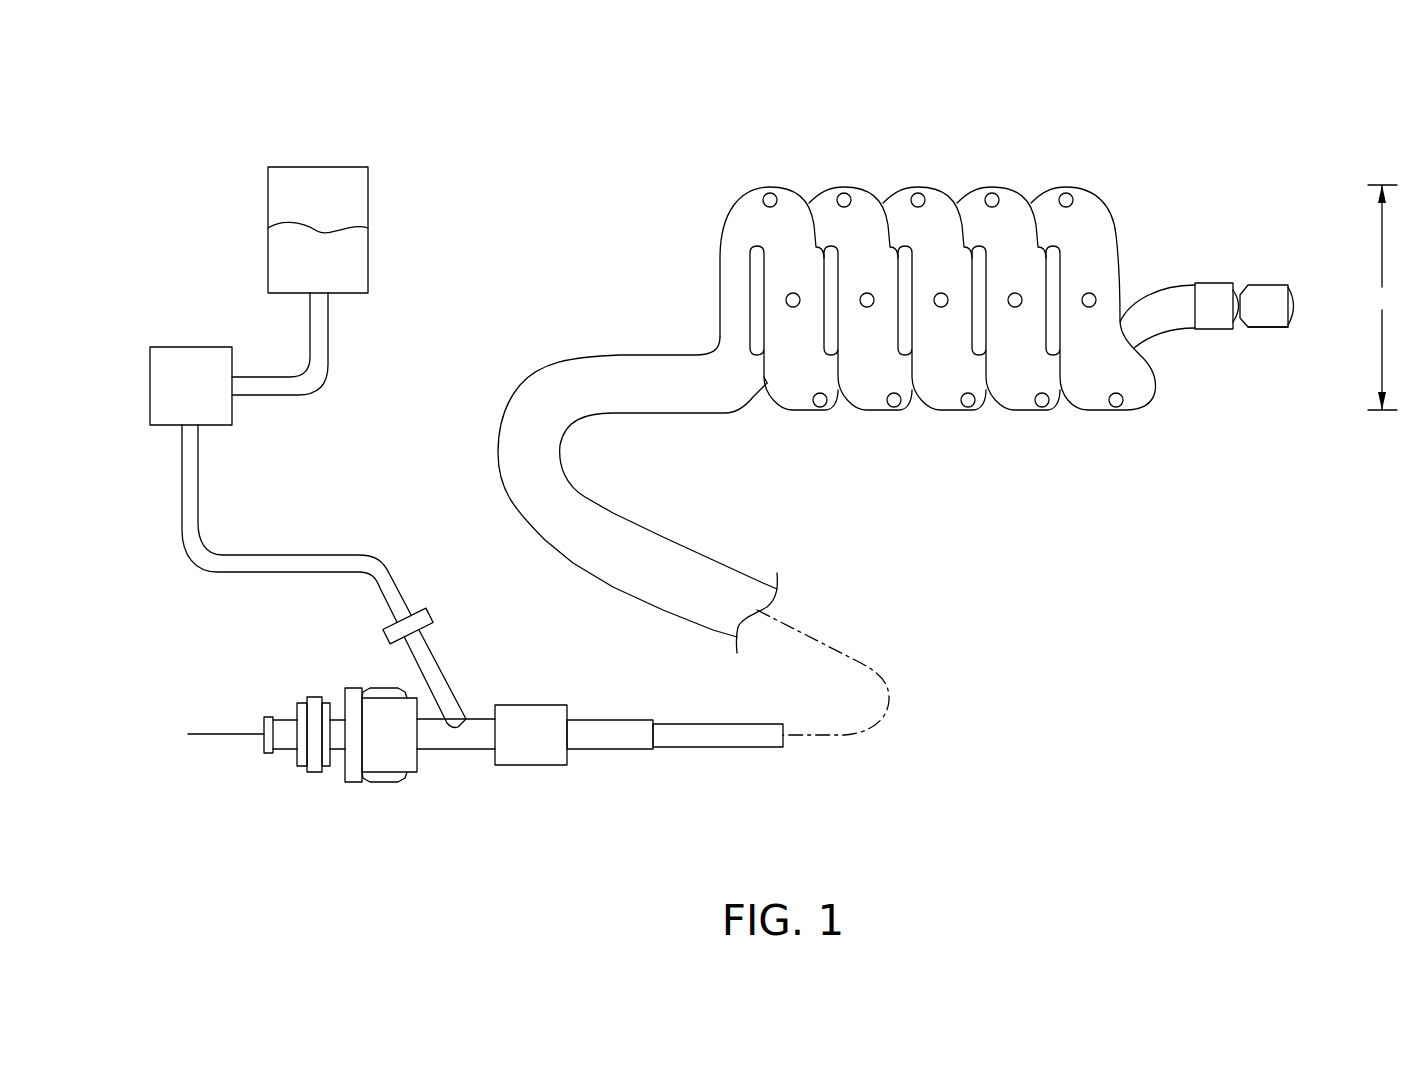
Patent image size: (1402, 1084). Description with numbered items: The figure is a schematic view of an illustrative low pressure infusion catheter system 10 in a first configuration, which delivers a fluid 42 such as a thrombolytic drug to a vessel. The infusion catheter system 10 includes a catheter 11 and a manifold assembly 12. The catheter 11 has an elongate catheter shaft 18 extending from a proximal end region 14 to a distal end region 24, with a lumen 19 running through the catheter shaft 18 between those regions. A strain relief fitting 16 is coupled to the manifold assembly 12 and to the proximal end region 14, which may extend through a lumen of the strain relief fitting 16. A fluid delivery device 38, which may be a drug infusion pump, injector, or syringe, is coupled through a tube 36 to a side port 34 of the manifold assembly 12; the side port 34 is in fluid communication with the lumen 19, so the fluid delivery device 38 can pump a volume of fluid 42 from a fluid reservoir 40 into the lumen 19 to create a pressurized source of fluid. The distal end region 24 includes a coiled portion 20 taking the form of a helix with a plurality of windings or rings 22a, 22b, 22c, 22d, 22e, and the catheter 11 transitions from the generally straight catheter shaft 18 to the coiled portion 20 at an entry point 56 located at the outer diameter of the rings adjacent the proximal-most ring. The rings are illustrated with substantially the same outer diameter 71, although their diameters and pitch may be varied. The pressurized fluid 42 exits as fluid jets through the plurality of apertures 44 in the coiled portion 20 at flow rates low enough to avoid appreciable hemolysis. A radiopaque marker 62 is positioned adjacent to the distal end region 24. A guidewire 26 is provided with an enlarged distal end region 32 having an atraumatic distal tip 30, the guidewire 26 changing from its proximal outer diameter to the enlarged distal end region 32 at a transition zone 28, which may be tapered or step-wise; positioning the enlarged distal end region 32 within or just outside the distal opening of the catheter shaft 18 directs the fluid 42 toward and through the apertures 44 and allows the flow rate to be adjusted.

The low pressure infusion catheter system 10 is at (232, 120).
The catheter 11 is at (622, 260).
The manifold assembly 12 is at (488, 682).
The proximal end region 14 is at (637, 802).
The strain relief fitting 16 is at (612, 748).
The catheter shaft 18 is at (718, 747).
The lumen 19 is at (778, 600).
The coiled portion 20 is at (993, 142).
The ring 22a is at (778, 188).
The ring 22b is at (852, 188).
The ring 22c is at (926, 188).
The ring 22d is at (1000, 188).
The ring 22e is at (1075, 188).
The distal end region 24 is at (1215, 283).
The guidewire 26 is at (228, 733).
The transition zone 28 is at (1263, 285).
The atraumatic distal tip 30 is at (1293, 293).
The enlarged distal end region 32 is at (1267, 327).
The side port 34 is at (428, 613).
The tube 36 is at (290, 553).
The fluid delivery device 38 is at (192, 347).
The fluid reservoir 40 is at (318, 167).
The fluid 42 is at (277, 258).
The apertures 44 is at (768, 192).
The entry point 56 is at (745, 410).
The radiopaque marker 62 is at (1207, 292).
The outer diameter 71 is at (1382, 297).